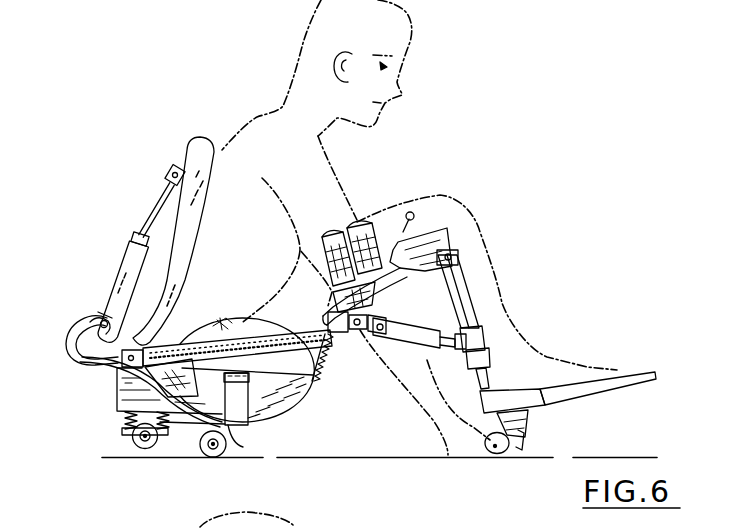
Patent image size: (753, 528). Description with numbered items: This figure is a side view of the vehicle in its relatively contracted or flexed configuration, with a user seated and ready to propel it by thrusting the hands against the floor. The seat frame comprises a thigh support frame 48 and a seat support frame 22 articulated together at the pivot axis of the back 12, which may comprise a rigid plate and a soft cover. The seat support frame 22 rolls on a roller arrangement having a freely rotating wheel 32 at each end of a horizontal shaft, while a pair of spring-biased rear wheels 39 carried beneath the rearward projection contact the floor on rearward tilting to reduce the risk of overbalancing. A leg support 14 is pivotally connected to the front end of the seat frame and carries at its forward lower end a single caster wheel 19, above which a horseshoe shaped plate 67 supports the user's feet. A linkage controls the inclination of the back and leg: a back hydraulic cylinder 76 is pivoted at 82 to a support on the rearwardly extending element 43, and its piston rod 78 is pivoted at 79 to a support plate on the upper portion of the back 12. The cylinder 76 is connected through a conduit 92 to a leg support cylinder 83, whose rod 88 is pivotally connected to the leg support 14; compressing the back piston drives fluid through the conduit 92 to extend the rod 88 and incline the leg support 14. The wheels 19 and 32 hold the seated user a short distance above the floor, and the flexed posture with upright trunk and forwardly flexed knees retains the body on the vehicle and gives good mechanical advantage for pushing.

The back 12 is at (197, 135).
The pivot 79 is at (172, 165).
The piston rod 78 is at (158, 200).
The back hydraulic cylinder 76 is at (128, 252).
The rearwardly extending element 43 is at (110, 315).
The pivot 82 is at (74, 330).
The conduit 92 is at (75, 366).
The thigh support frame 48 is at (201, 338).
The rear wheels 39 is at (128, 433).
The wheel 32 is at (243, 447).
The seat support frame 22 is at (303, 403).
The leg support cylinder 83 is at (360, 340).
The leg support 14 is at (485, 320).
The rod 88 is at (447, 343).
The horseshoe shaped plate 67 is at (637, 370).
The caster wheel 19 is at (480, 455).